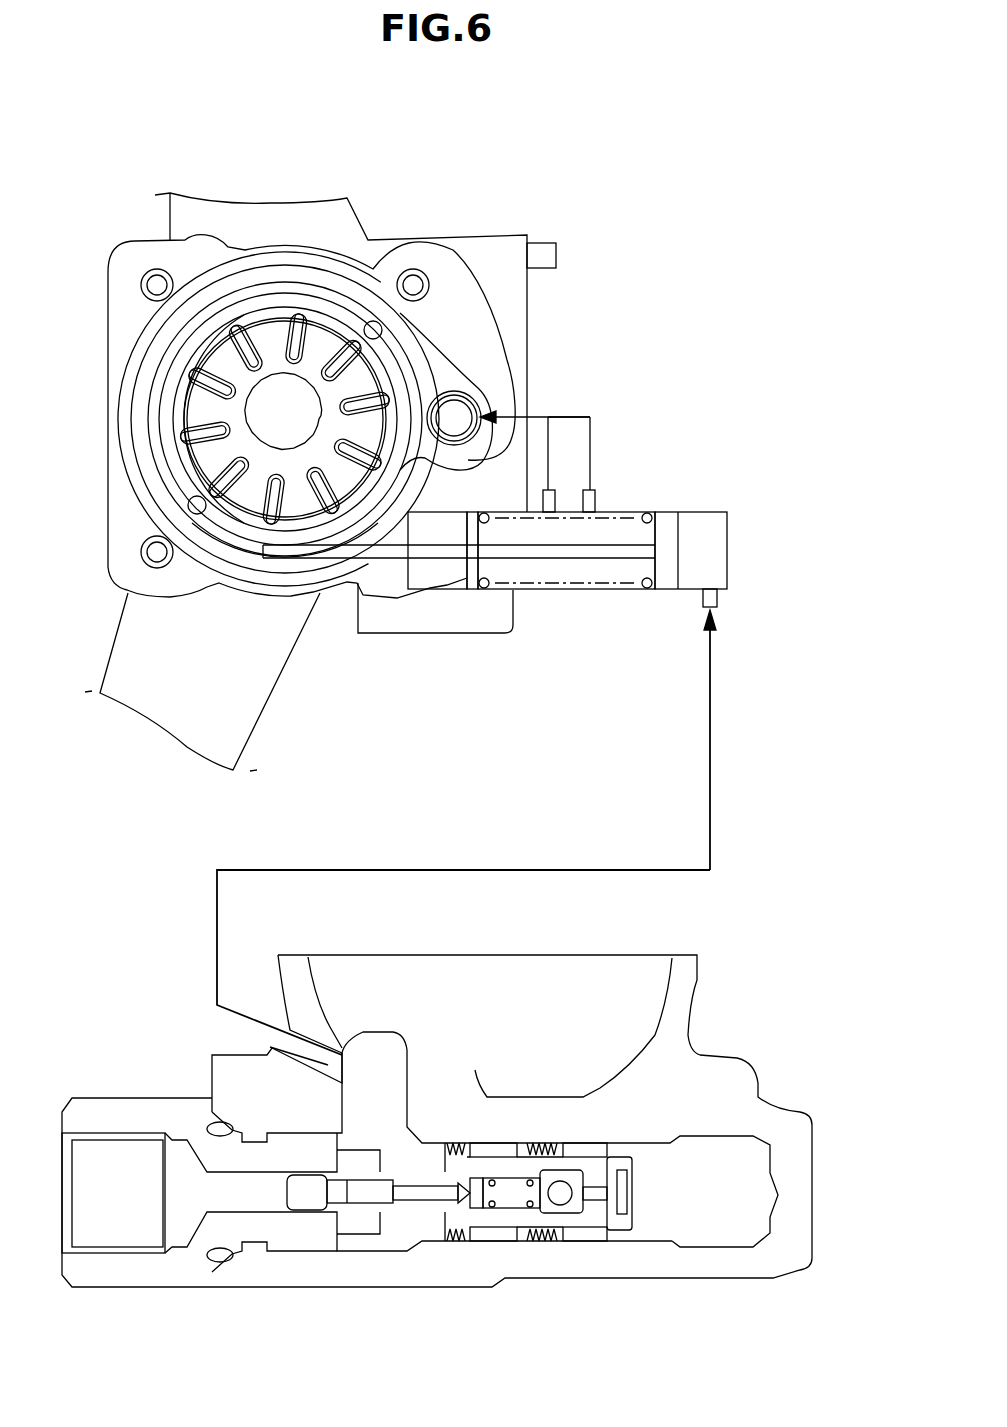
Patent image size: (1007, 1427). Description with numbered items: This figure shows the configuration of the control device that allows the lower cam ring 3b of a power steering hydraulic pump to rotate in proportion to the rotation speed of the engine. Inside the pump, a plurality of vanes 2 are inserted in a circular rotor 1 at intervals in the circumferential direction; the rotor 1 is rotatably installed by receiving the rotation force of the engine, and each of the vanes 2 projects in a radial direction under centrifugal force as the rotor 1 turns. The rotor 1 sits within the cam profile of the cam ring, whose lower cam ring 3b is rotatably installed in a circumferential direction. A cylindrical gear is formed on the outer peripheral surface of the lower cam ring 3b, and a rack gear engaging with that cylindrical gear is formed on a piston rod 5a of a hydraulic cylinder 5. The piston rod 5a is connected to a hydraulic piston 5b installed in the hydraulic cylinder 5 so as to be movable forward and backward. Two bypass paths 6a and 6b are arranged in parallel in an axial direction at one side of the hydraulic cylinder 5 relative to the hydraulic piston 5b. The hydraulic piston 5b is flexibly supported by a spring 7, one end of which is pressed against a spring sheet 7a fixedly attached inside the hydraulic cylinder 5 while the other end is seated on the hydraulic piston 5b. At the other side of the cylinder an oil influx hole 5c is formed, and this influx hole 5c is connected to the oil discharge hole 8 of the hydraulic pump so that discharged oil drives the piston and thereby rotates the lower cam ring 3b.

The rotor 1 is at (323, 343).
The vanes 2 is at (190, 420).
The lower cam ring 3b is at (185, 467).
The hydraulic cylinder 5 is at (566, 593).
The piston rod 5a is at (382, 552).
The hydraulic piston 5b is at (680, 548).
The oil influx hole 5c is at (720, 596).
The bypass path 6a is at (553, 490).
The bypass path 6b is at (594, 490).
The spring 7 is at (646, 592).
The spring sheet 7a is at (470, 575).
The oil discharge hole 8 is at (297, 1058).